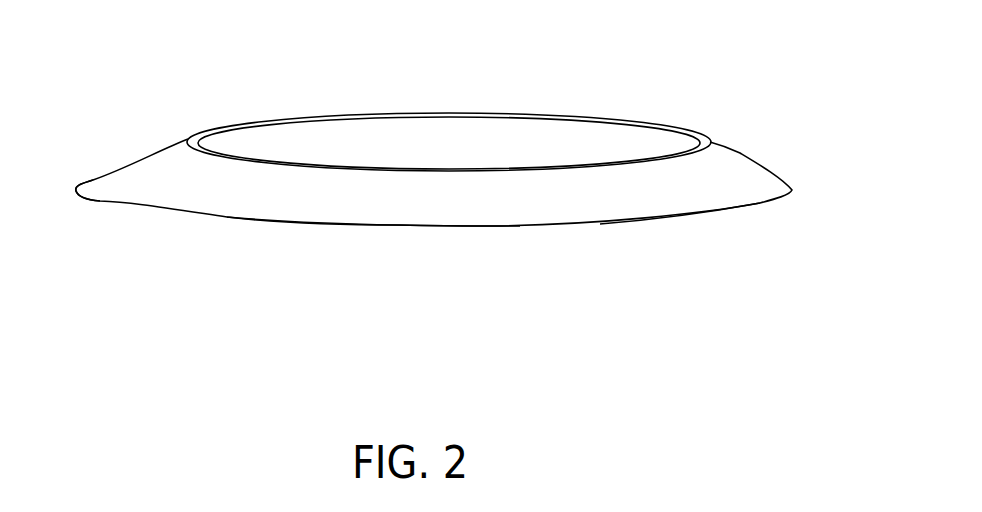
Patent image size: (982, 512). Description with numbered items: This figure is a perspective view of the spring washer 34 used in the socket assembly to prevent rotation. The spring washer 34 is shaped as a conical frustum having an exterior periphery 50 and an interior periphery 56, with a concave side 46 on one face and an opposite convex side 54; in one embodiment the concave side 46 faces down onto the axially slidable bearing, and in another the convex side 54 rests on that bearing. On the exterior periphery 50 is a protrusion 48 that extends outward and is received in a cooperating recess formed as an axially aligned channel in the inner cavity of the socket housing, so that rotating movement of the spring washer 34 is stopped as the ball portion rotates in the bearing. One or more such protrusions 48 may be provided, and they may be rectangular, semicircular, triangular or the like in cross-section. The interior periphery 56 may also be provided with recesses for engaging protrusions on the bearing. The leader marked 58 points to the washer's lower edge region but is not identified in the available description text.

The spring washer 34 is at (740, 152).
The concave side 46 is at (263, 133).
The protrusion 48 is at (103, 200).
The periphery 50 is at (357, 224).
The convex side 54 is at (507, 210).
The interior periphery 56 is at (420, 113).
The right lower edge 58 is at (652, 218).